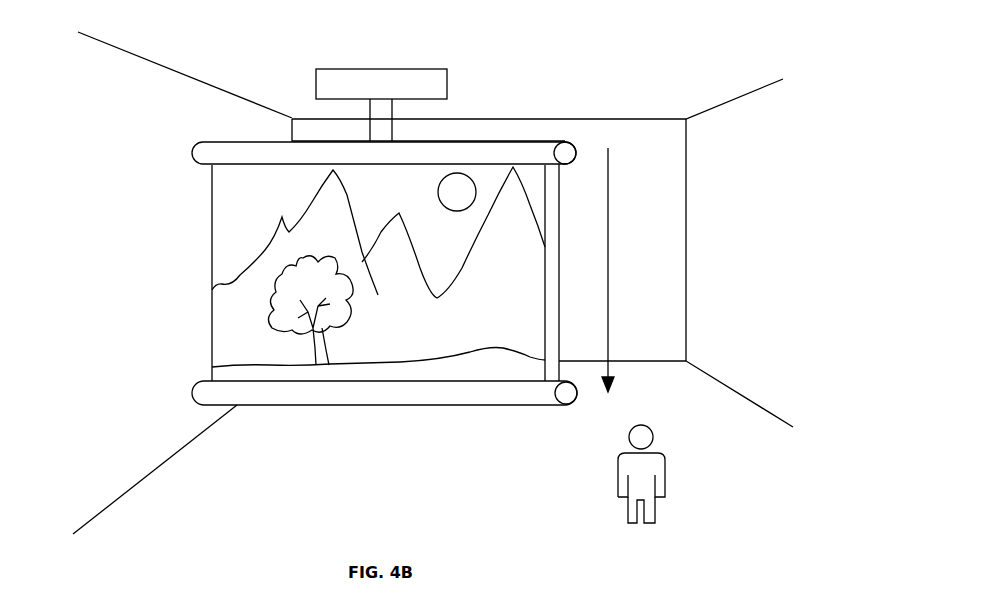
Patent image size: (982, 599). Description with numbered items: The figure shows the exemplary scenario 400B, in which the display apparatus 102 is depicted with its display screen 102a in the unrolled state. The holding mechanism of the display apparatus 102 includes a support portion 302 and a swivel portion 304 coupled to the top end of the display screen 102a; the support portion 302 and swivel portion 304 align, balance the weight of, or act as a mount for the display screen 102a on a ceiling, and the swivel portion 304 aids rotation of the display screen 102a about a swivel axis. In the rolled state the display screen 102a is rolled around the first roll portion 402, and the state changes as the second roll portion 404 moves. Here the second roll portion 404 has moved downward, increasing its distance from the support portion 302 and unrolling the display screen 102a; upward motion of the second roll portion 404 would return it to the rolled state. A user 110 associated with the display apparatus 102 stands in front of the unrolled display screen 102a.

The exemplary scenario 400B is at (722, 48).
The display apparatus 102 is at (289, 141).
The display screen 102a is at (212, 268).
The support portion 302 is at (447, 87).
The swivel portion 304 is at (393, 137).
The first roll portion 402 is at (193, 152).
The second roll portion 404 is at (193, 390).
The user 110 is at (618, 458).